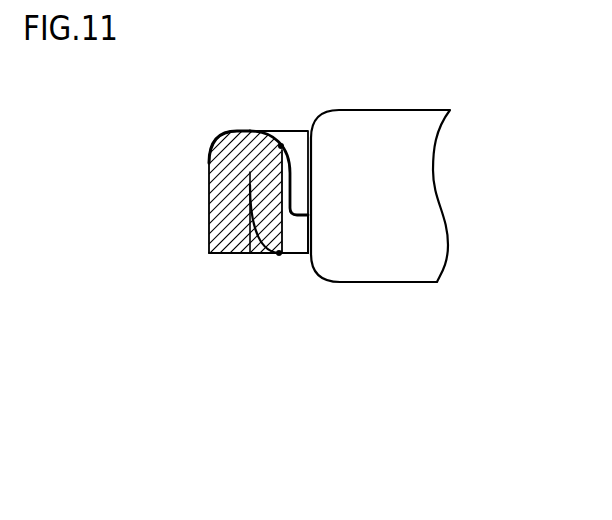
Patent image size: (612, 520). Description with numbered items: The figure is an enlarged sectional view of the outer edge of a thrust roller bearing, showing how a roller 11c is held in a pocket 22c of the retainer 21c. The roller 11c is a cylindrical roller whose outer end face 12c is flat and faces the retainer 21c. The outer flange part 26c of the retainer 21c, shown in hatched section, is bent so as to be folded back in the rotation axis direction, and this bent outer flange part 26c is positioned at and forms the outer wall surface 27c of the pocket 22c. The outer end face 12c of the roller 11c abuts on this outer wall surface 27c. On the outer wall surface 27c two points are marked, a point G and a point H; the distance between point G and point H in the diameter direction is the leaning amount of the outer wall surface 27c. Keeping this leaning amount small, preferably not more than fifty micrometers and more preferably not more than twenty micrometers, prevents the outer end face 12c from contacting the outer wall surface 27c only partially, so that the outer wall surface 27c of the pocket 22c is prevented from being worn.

The roller 11c is at (383, 142).
The end face 12c is at (300, 243).
The retainer 21c is at (198, 122).
The pocket 22c is at (327, 293).
The outer flange part 26c is at (232, 240).
The outer wall surface 27c is at (292, 168).
The point G is at (280, 145).
The point H is at (278, 255).